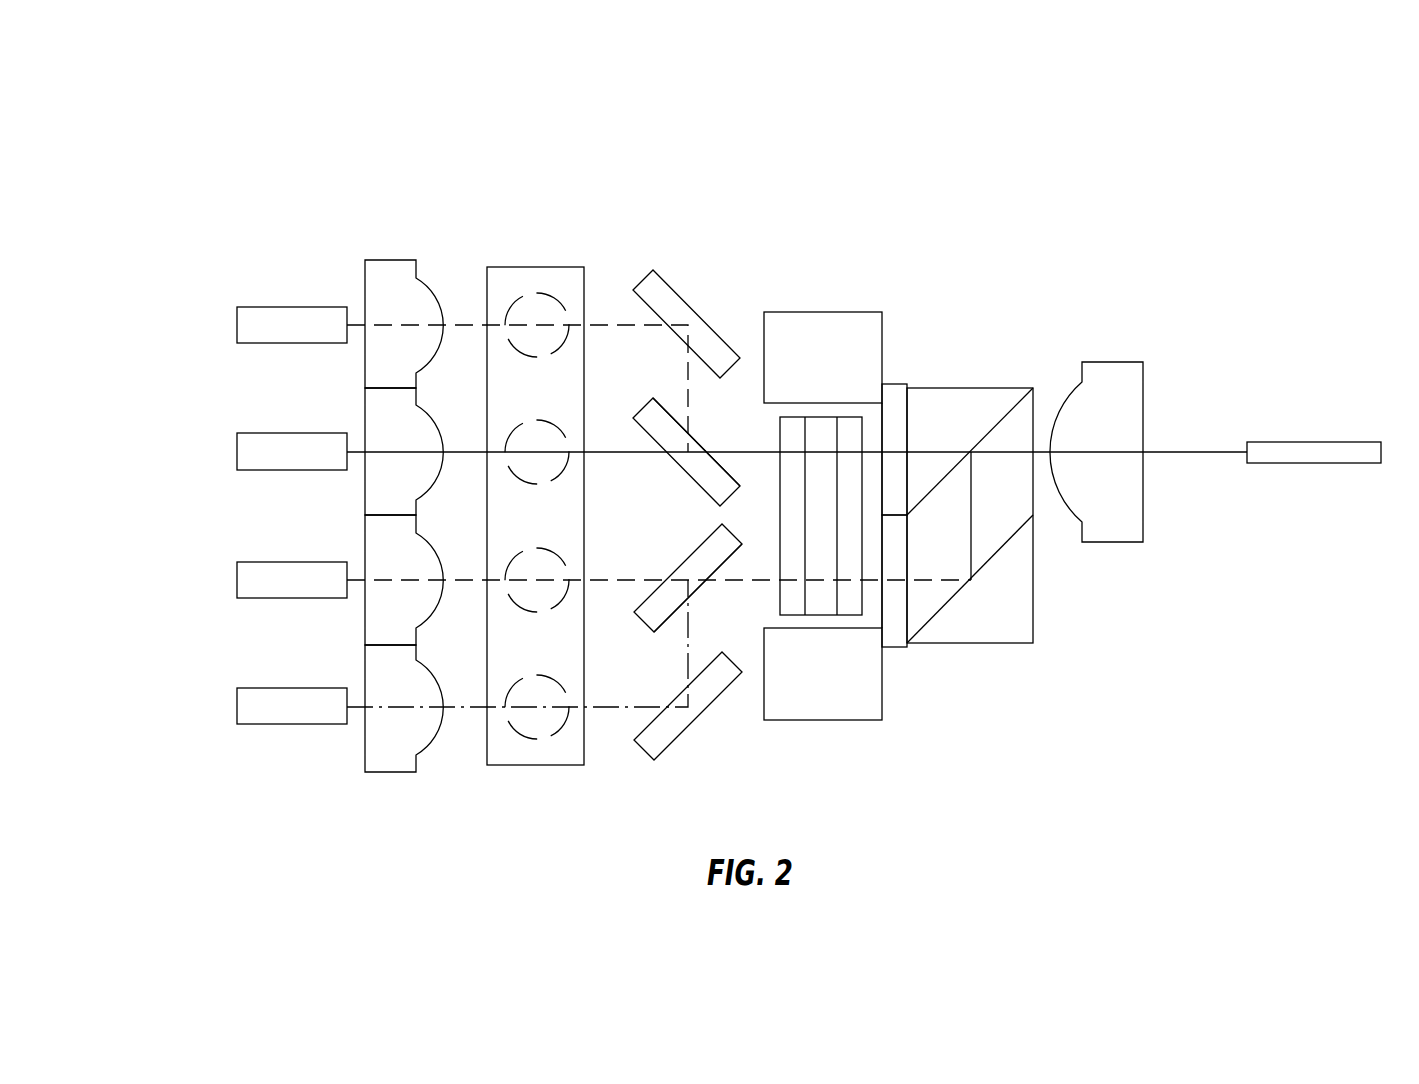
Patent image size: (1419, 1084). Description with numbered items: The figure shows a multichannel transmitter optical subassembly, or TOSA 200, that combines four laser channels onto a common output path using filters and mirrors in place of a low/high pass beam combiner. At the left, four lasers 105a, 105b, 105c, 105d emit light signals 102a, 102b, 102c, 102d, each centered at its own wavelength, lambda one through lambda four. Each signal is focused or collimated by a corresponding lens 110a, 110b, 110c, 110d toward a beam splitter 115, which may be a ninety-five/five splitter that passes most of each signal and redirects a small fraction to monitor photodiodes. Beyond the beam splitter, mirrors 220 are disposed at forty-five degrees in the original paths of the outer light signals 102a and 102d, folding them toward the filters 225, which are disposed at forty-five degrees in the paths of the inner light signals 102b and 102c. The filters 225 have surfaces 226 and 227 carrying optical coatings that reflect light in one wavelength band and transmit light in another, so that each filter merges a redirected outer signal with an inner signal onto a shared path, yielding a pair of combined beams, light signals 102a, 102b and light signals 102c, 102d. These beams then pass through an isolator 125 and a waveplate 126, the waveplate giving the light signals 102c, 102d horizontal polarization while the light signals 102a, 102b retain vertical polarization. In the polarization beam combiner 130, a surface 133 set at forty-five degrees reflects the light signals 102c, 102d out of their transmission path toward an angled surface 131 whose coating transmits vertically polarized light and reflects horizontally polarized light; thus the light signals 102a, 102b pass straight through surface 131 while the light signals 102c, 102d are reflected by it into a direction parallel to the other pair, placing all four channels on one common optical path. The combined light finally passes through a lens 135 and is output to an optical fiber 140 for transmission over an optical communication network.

The multichannel TOSA 200 is at (1290, 150).
The laser 105a is at (268, 328).
The laser 105b is at (268, 456).
The laser 105c is at (268, 583).
The laser 105d is at (268, 710).
The lens 110a is at (407, 312).
The lens 110b is at (407, 440).
The lens 110c is at (407, 567).
The lens 110d is at (407, 695).
The light signal 102a is at (380, 327).
The light signal 102b is at (380, 455).
The light signal 102c is at (380, 583).
The light signal 102d is at (380, 710).
The beam splitter 115 is at (503, 748).
The mirror 220 is at (655, 290).
The filter 225 is at (690, 433).
The surface 227 is at (660, 407).
The surface 226 is at (677, 623).
The isolator 125 is at (877, 673).
The waveplate 126 is at (890, 397).
The polarization beam combiner 130 is at (1018, 628).
The surface 131 is at (945, 477).
The surface 133 is at (942, 612).
The lens 135 is at (1133, 470).
The optical fiber 140 is at (1295, 455).